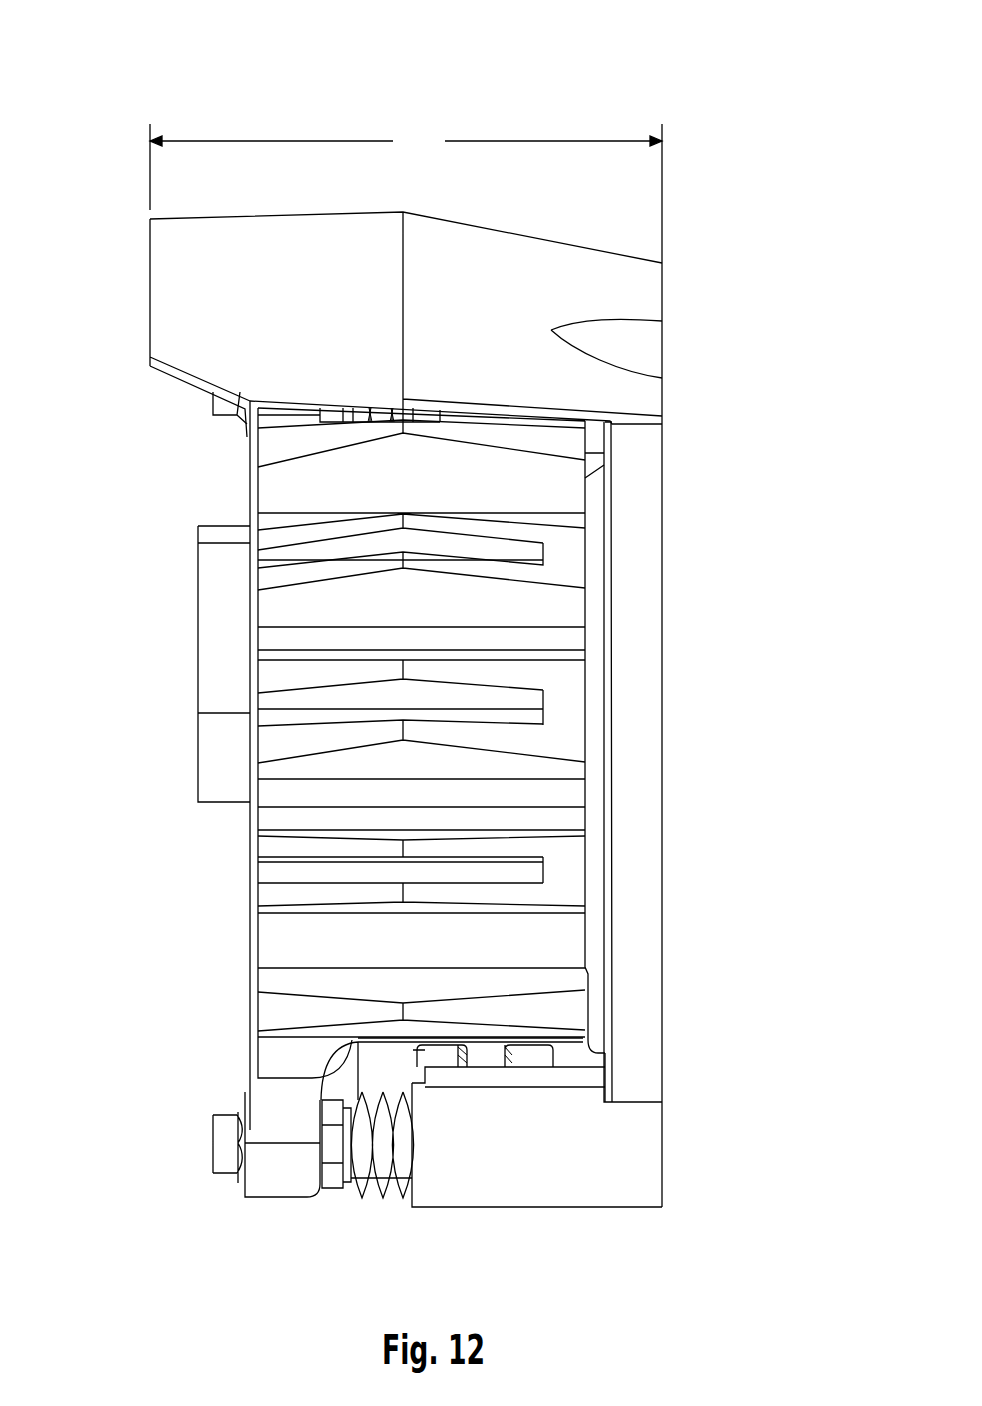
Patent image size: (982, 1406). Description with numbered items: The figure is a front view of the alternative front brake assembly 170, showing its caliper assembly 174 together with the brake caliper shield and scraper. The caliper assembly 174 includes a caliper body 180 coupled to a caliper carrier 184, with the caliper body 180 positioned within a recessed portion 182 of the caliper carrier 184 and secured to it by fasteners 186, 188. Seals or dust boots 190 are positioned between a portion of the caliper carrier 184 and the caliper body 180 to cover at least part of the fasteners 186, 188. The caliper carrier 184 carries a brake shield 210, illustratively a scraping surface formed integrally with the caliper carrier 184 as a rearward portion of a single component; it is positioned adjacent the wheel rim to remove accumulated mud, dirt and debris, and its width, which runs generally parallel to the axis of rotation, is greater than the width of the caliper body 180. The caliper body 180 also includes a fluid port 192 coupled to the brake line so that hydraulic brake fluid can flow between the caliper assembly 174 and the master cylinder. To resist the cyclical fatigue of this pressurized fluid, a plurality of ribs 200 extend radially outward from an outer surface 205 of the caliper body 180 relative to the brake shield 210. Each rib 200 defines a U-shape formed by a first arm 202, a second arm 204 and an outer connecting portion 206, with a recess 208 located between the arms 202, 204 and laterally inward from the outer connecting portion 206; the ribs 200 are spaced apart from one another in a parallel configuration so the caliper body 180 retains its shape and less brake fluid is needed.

The front brake assembly 170 is at (306, 120).
The caliper assembly 174 is at (683, 742).
The caliper body 180 is at (278, 488).
The recessed portion 182 is at (594, 1010).
The caliper carrier 184 is at (640, 1148).
The fastener 186 is at (222, 1132).
The fastener 188 is at (332, 1180).
The dust boot 190 is at (382, 1185).
The fluid port 192 is at (185, 743).
The rib 200 is at (568, 688).
The first arm 202 is at (278, 607).
The second arm 204 is at (273, 535).
The outer surface 205 is at (270, 800).
The outer connecting portion 206 is at (572, 882).
The recess 208 is at (270, 558).
The brake shield 210 is at (536, 274).